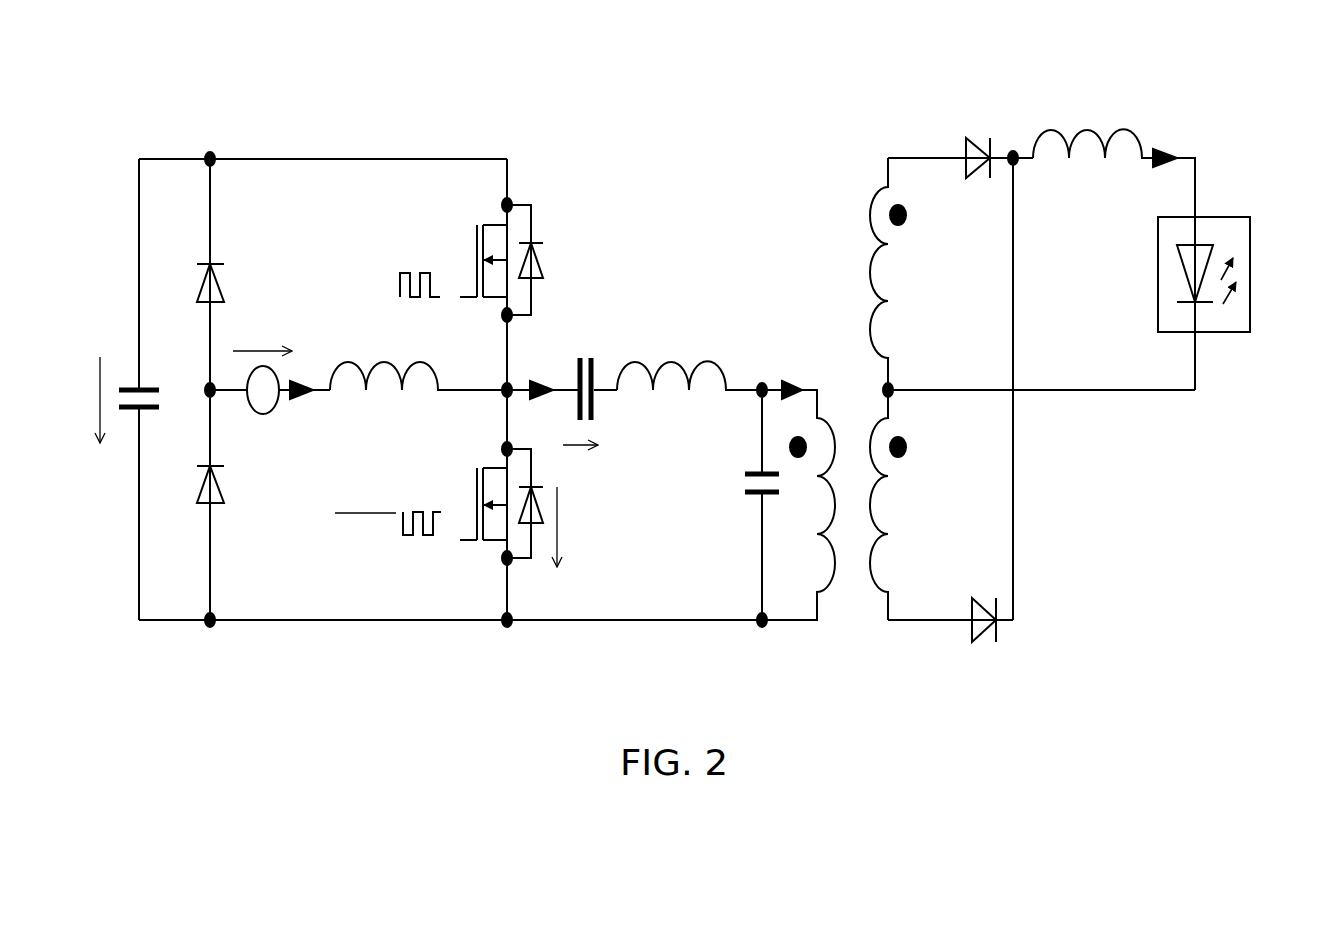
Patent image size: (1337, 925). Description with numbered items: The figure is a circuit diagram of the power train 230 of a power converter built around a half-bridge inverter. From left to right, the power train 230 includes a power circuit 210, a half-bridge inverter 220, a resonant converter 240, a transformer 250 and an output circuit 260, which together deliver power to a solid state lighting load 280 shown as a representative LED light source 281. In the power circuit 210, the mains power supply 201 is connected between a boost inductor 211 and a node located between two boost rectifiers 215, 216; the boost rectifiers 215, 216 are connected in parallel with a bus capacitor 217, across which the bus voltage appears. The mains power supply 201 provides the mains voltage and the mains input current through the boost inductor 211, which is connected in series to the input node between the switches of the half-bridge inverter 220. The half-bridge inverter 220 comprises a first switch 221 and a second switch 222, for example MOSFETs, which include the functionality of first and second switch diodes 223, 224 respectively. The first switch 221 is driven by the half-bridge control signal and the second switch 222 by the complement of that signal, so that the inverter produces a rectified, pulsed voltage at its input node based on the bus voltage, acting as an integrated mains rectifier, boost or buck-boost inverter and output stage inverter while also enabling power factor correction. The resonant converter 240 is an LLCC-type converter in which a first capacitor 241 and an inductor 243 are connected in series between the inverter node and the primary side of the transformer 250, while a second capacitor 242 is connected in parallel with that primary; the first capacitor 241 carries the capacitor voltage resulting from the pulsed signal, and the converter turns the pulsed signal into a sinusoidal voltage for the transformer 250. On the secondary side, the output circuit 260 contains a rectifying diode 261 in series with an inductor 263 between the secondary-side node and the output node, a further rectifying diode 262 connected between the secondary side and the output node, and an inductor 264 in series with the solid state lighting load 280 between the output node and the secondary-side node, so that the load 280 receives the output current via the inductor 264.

The power train 230 is at (697, 51).
The power circuit 210 is at (195, 140).
The boost rectifier 215 is at (232, 283).
The boost rectifier 216 is at (232, 484).
The bus capacitor 217 is at (158, 377).
The mains power supply 201 is at (270, 405).
The boost inductor 211 is at (418, 393).
The half-bridge inverter 220 is at (447, 140).
The first switch 221 is at (424, 263).
The second switch 222 is at (421, 504).
The first switch diode 223 is at (546, 260).
The second switch diode 224 is at (539, 503).
The resonant converter 240 is at (624, 246).
The first capacitor 241 is at (601, 367).
The second capacitor 242 is at (738, 505).
The inductor 243 is at (689, 352).
The transformer 250 is at (799, 336).
The output circuit 260 is at (927, 141).
The rectifying diode 261 is at (960, 173).
The rectifying diode 262 is at (950, 602).
The inductor 263 is at (899, 389).
The inductor 264 is at (1114, 259).
The solid state lighting load 280 is at (1220, 260).
The LED light source 281 is at (1213, 245).